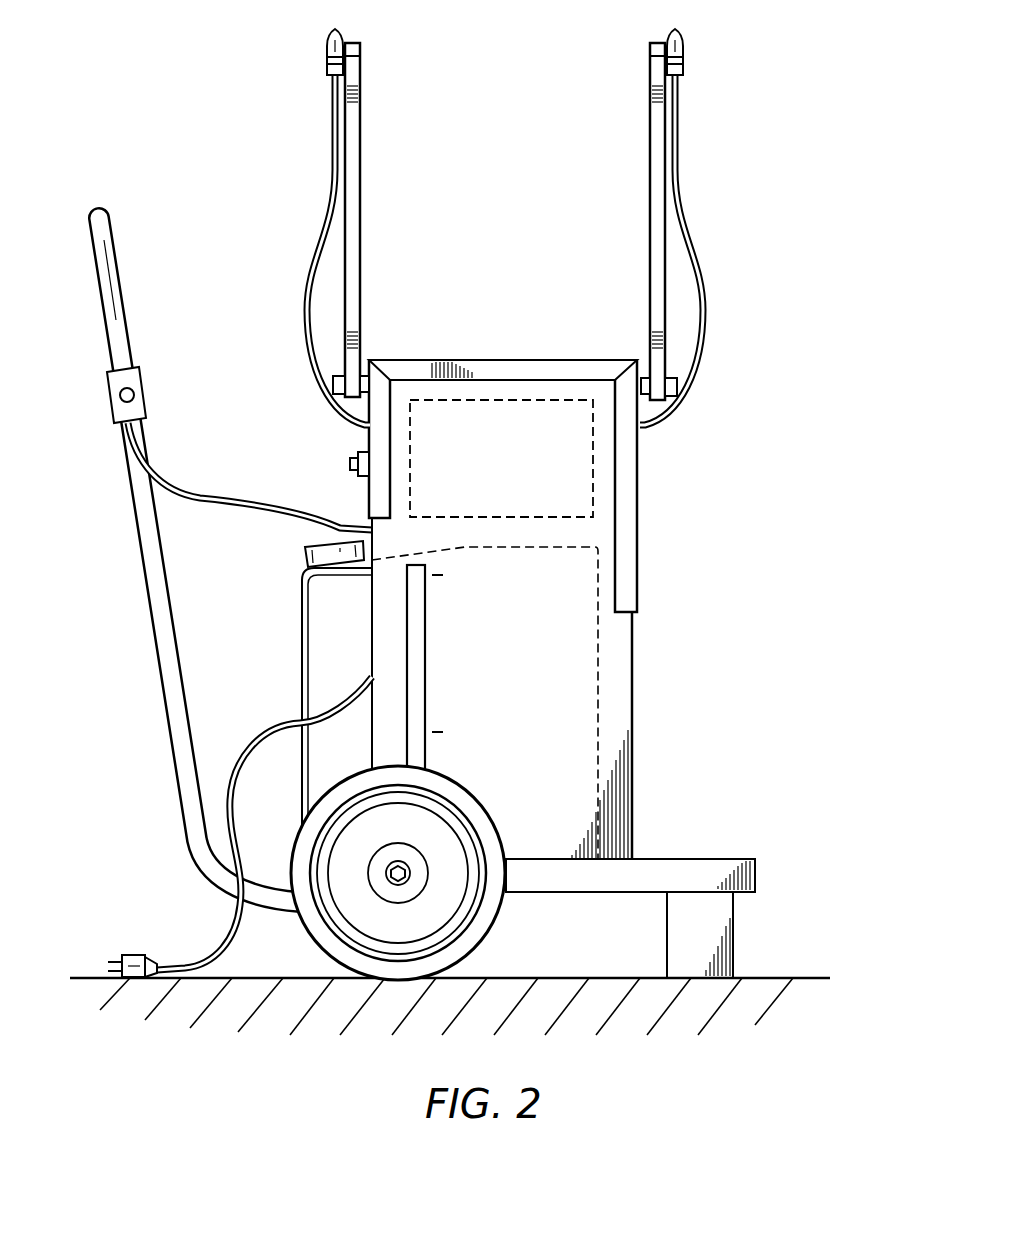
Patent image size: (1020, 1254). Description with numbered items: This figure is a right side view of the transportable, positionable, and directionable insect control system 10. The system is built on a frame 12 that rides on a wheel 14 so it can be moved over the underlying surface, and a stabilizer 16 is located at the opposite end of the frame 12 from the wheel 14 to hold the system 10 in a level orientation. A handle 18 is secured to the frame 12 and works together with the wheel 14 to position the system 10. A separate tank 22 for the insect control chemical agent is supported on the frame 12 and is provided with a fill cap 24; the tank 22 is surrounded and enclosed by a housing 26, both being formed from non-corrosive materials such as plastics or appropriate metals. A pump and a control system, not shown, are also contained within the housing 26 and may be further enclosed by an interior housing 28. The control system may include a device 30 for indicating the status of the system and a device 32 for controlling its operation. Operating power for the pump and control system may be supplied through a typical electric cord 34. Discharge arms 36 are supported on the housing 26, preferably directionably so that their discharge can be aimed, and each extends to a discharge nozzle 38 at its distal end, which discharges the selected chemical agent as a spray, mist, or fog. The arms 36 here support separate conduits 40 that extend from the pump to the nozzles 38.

The insect control system 10 is at (822, 478).
The frame 12 is at (770, 880).
The wheel 14 is at (488, 916).
The stabilizer 16 is at (734, 930).
The handle 18 is at (146, 596).
The tank 22 is at (302, 650).
The fill cap 24 is at (305, 558).
The housing 26 is at (644, 658).
The interior housing 28 is at (594, 470).
The status indicating device 30 is at (350, 464).
The control device 32 is at (107, 395).
The electric cord 34 is at (210, 944).
The discharge arm 36 is at (362, 150).
The discharge nozzle 38 is at (327, 48).
The conduit 40 is at (310, 327).